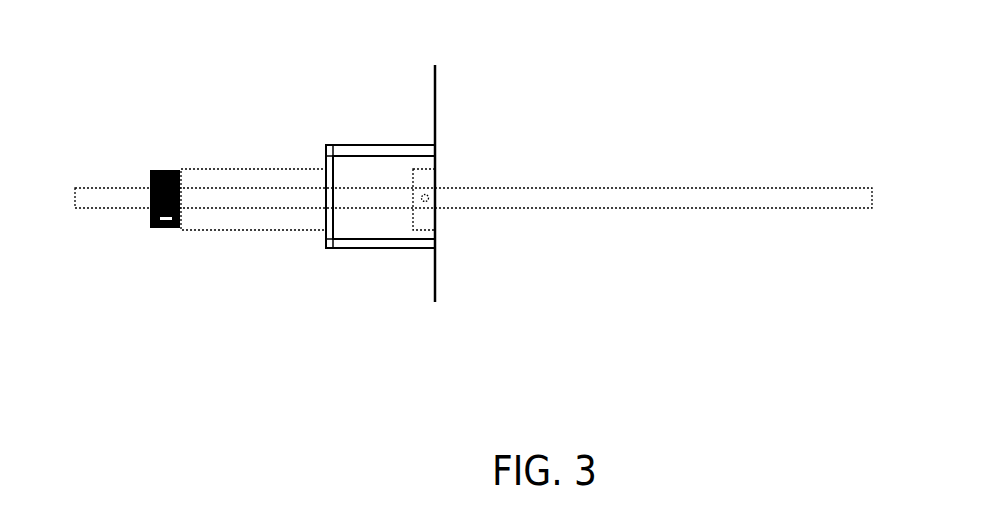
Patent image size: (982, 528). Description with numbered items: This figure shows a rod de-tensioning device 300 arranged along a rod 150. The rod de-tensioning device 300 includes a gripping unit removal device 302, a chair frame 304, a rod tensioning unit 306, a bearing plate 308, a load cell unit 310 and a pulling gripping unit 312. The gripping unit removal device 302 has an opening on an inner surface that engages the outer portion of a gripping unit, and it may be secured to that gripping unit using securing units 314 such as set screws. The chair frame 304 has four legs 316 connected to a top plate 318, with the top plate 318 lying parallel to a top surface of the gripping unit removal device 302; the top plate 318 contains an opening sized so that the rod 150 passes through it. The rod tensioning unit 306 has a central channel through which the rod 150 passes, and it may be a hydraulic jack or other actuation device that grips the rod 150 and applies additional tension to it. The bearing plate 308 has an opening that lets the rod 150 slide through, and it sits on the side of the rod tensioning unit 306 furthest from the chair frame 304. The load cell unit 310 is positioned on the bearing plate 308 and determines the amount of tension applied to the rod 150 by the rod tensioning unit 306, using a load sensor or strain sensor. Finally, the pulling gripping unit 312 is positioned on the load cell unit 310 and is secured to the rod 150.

The rod 150 is at (85, 209).
The rod de-tensioning device 300 is at (227, 301).
The gripping unit removal device 302 is at (422, 233).
The chair frame 304 is at (347, 253).
The rod tensioning unit 306 is at (275, 233).
The bearing plate 308 is at (173, 231).
The load cell unit 310 is at (168, 166).
The pulling gripping unit 312 is at (142, 221).
The securing units 314 is at (433, 192).
The legs 316 is at (377, 145).
The top plate 318 is at (322, 152).